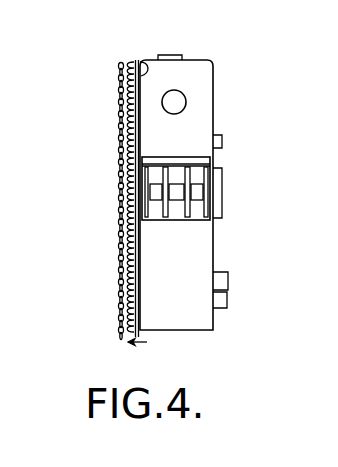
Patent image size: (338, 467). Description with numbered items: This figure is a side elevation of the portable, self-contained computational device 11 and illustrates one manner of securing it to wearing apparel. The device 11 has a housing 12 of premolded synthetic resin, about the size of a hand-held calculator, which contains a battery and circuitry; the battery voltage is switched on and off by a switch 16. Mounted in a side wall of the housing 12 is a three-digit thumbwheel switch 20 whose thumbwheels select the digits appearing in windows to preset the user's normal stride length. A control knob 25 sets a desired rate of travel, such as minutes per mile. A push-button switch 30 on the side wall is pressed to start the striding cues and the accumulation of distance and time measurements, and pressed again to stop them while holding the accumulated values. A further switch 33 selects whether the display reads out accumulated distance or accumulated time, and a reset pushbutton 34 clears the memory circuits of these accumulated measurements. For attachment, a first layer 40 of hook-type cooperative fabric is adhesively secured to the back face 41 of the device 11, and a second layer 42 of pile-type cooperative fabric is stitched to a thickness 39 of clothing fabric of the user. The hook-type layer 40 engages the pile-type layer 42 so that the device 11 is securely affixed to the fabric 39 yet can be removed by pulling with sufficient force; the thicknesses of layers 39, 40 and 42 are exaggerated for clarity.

The portable self-contained computational device 11 is at (208, 64).
The housing 12 is at (160, 58).
The switch 16 is at (222, 142).
The three-digit thumbwheel switch 20 is at (198, 173).
The control knob 25 is at (222, 197).
The push-button switch 30 is at (186, 98).
The switch 33 is at (228, 278).
The reset pushbutton 34 is at (227, 300).
The thickness of fabric 39 is at (117, 108).
The first layer 40 is at (138, 60).
The back face 41 is at (145, 68).
The second layer 42 is at (129, 64).